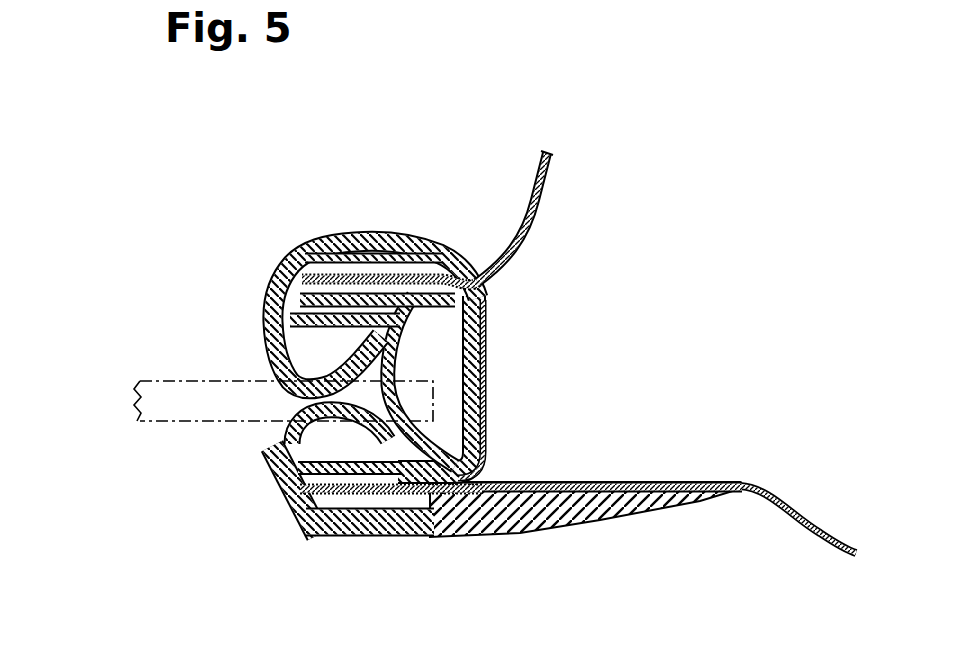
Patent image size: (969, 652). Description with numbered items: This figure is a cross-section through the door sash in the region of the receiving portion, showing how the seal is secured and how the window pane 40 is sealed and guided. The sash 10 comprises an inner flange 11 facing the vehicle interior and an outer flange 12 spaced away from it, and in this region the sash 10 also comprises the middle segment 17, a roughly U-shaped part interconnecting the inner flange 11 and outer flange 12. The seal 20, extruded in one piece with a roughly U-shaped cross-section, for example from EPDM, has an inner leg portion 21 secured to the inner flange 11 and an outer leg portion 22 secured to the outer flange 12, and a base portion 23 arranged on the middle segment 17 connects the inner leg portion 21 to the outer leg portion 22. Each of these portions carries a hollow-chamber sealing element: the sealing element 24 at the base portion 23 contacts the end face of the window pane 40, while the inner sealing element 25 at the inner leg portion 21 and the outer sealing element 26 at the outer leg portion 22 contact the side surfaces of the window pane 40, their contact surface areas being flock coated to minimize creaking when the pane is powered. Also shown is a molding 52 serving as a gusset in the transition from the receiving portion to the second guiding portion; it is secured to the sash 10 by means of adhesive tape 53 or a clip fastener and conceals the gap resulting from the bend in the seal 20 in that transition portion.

The sash 10 is at (548, 198).
The inner flange 11 is at (378, 233).
The outer flange 12 is at (420, 533).
The middle segment 17 is at (488, 424).
The seal 20 is at (296, 236).
The inner leg portion 21 is at (270, 288).
The outer leg portion 22 is at (290, 513).
The base portion 23 is at (487, 368).
The sealing element 24 is at (488, 320).
The inner sealing element 25 is at (300, 342).
The outer sealing element 26 is at (294, 442).
The window pane 40 is at (138, 380).
The molding 52 is at (646, 505).
The adhesive tape 53 is at (540, 488).